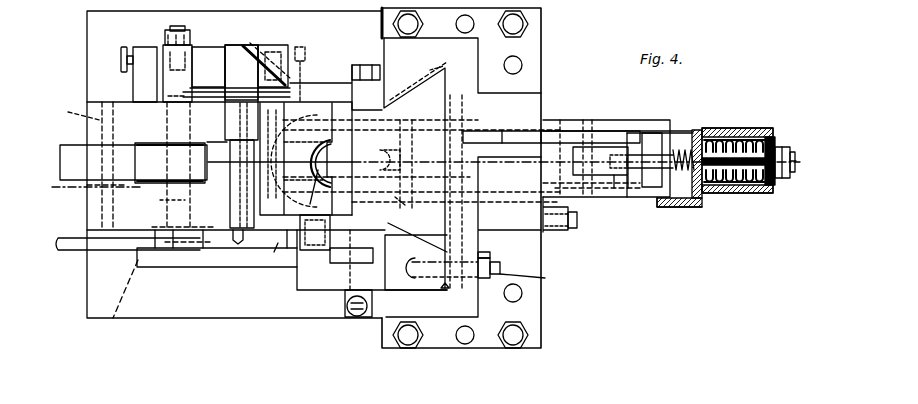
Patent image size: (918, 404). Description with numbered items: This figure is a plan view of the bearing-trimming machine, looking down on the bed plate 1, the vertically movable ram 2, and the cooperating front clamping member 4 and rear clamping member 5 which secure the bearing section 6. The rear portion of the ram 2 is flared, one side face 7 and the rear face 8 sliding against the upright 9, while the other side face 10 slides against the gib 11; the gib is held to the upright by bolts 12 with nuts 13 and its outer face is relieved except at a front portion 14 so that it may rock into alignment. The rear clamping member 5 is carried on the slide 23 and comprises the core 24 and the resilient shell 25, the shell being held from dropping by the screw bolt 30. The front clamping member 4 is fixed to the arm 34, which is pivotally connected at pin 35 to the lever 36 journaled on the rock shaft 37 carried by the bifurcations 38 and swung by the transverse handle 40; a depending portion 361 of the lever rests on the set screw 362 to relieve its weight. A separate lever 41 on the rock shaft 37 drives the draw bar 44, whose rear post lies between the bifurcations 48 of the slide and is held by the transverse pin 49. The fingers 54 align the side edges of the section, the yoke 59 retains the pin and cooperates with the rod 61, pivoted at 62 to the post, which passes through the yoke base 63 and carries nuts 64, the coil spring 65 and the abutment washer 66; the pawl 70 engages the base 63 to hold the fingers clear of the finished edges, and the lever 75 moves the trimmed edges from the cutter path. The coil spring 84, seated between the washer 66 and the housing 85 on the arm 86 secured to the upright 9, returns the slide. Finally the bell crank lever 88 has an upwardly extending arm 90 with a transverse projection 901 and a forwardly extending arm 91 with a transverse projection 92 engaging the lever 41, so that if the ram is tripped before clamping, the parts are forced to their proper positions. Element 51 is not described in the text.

The bed plate 1 is at (233, 312).
The ram 2 is at (413, 100).
The front clamping member 4 is at (310, 194).
The rear clamping member 5 is at (181, 175).
The bearing section 6 is at (320, 139).
The side face of ram 7 is at (421, 124).
The rear face of ram 8 is at (450, 105).
The upright 9 is at (490, 301).
The other side face of ram 10 is at (423, 243).
The gib 11 is at (435, 261).
The bolts 12 is at (522, 272).
The nuts 13 is at (485, 252).
The front portion of gib outer face 14 is at (399, 286).
The slide 23 is at (553, 163).
The core 24 is at (336, 160).
The shell 25 is at (312, 188).
The screw bolt 30 is at (318, 62).
The arm 34 is at (254, 241).
The pin 35 is at (232, 175).
The lever 36 is at (254, 95).
The depending portion of lever 361 is at (196, 50).
The set screw 362 is at (126, 72).
The rock shaft 37 is at (159, 201).
The bifurcations 38 is at (208, 256).
The transverse handle 40 is at (277, 258).
The lever 41 is at (66, 247).
The draw bar 44 is at (615, 145).
The bifurcations of slide 48 is at (631, 184).
The transverse pin 49 is at (597, 148).
The guide 51 is at (72, 110).
The fingers 54 is at (410, 208).
The yoke 59 is at (665, 145).
The rod 61 is at (657, 157).
The pivotal connection 62 is at (614, 190).
The base of yoke 63 is at (670, 187).
The nuts 64 is at (784, 178).
The coil spring 65 is at (735, 138).
The abutment washer 66 is at (777, 140).
The pawl 70 is at (640, 133).
The lever 75 is at (330, 85).
The coil spring 84 is at (758, 186).
The housing 85 is at (742, 193).
The arm 86 is at (592, 210).
The bell crank lever 88 is at (241, 262).
The upwardly extending arm 90 is at (318, 262).
The transverse projection 901 is at (315, 232).
The forwardly extending arm 91 is at (161, 263).
The transverse projection 92 is at (116, 301).